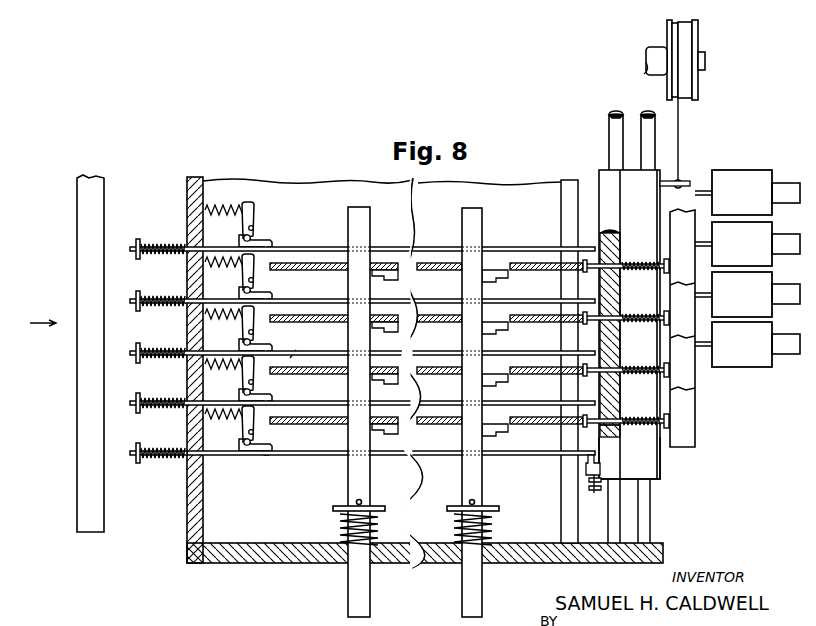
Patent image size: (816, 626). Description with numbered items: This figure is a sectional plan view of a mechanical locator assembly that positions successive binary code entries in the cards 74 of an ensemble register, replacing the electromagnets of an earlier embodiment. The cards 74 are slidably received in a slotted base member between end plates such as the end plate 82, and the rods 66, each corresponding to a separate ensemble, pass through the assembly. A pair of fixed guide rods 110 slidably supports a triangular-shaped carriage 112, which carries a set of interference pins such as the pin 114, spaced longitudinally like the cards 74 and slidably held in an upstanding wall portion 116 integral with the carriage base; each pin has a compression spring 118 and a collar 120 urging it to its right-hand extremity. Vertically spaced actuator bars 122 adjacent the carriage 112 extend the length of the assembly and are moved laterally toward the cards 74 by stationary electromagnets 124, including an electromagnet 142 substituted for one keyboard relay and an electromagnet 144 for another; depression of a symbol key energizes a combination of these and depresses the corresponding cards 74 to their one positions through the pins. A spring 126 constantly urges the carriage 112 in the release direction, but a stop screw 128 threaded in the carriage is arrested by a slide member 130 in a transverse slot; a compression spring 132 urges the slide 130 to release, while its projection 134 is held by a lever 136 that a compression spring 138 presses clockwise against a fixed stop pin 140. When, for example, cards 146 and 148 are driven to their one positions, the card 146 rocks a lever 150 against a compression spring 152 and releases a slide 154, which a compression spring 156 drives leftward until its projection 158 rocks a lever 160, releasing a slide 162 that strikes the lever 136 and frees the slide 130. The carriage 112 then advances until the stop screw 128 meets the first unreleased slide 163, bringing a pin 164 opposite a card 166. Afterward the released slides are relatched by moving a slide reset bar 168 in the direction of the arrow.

The rods 66 is at (368, 598).
The cards 74 is at (312, 270).
The end plate 82 is at (275, 564).
The fixed guide rods 110 is at (620, 512).
The carriage 112 is at (663, 470).
The interference pin 114 is at (612, 258).
The upstanding wall portion 116 is at (596, 186).
The compression spring 118 is at (630, 266).
The collar 120 is at (610, 285).
The actuator bars 122 is at (688, 378).
The stationary electromagnets 124 is at (780, 154).
The spring 126 is at (680, 135).
The stop screw 128 is at (592, 495).
The slide member 130 is at (536, 459).
The compression spring 132 is at (175, 458).
The projection 134 is at (272, 463).
The lever 136 is at (241, 452).
The compression spring 138 is at (240, 420).
The fixed stop pin 140 is at (256, 432).
The electromagnet 142 is at (757, 354).
The electromagnet 144 is at (757, 305).
The card 146 is at (553, 327).
The card 148 is at (542, 428).
The lever 150 is at (244, 332).
The compression spring 152 is at (235, 304).
The slide 154 is at (309, 343).
The compression spring 156 is at (200, 352).
The projection 158 is at (282, 339).
The lever 160 is at (244, 384).
The slide 162 is at (308, 401).
The slide 163 is at (515, 304).
The pin 164 is at (610, 438).
The card 166 is at (512, 275).
The slide reset bar 168 is at (77, 372).